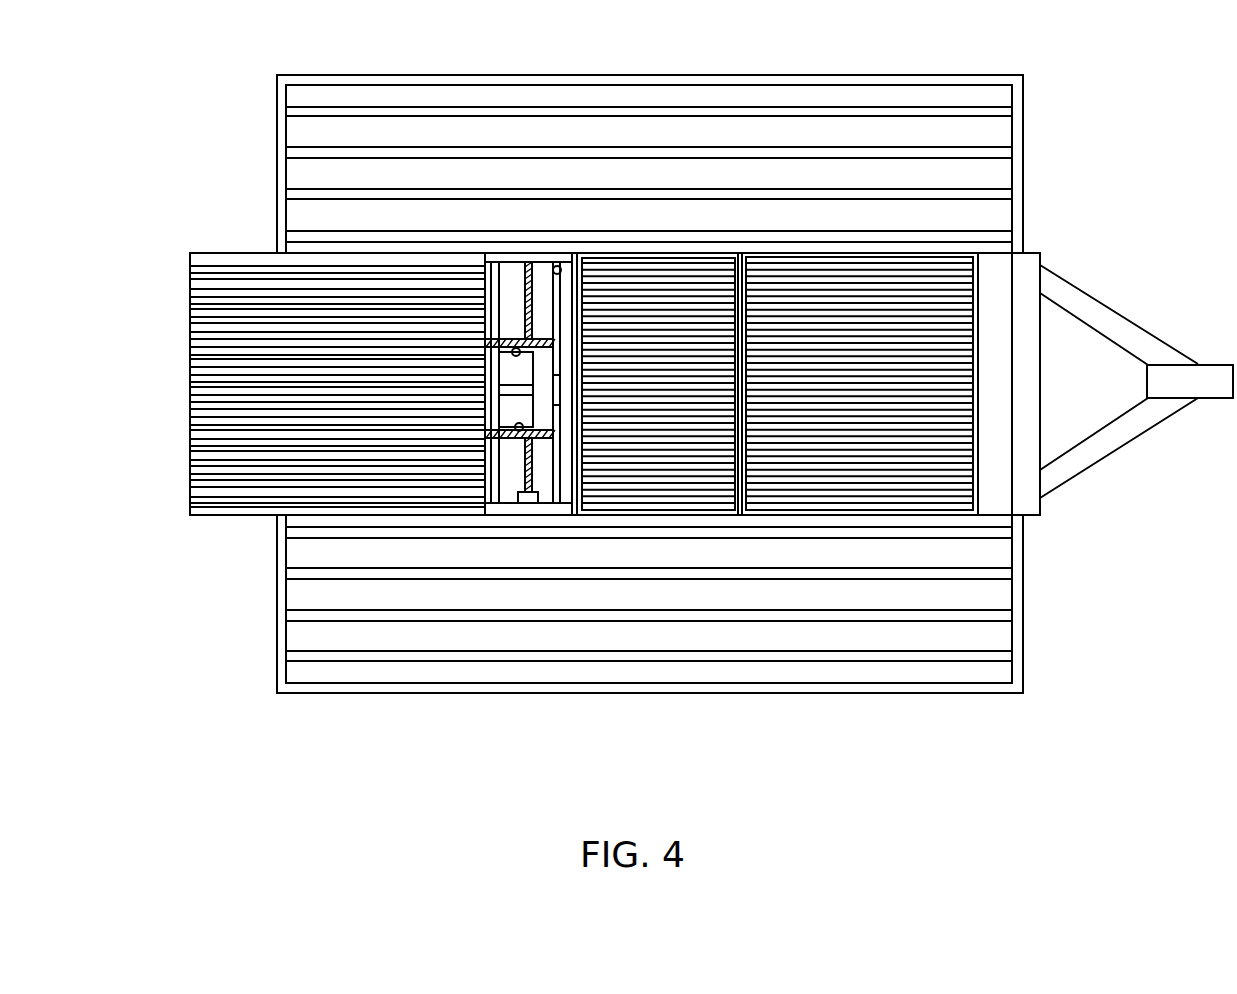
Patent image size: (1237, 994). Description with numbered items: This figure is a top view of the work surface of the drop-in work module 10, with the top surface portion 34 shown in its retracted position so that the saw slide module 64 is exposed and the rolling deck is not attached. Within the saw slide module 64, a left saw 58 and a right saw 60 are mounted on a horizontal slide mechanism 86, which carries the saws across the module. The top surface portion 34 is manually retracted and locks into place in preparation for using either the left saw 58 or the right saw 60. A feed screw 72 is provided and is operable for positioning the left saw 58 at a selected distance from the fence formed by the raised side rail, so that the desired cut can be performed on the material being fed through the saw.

The work module 10 is at (1122, 110).
The top surface portion 34 is at (230, 283).
The left saw 58 is at (512, 338).
The right saw 60 is at (508, 443).
The saw slide module 64 is at (544, 493).
The feed screw 72 is at (527, 262).
The horizontal slide mechanism 86 is at (558, 266).